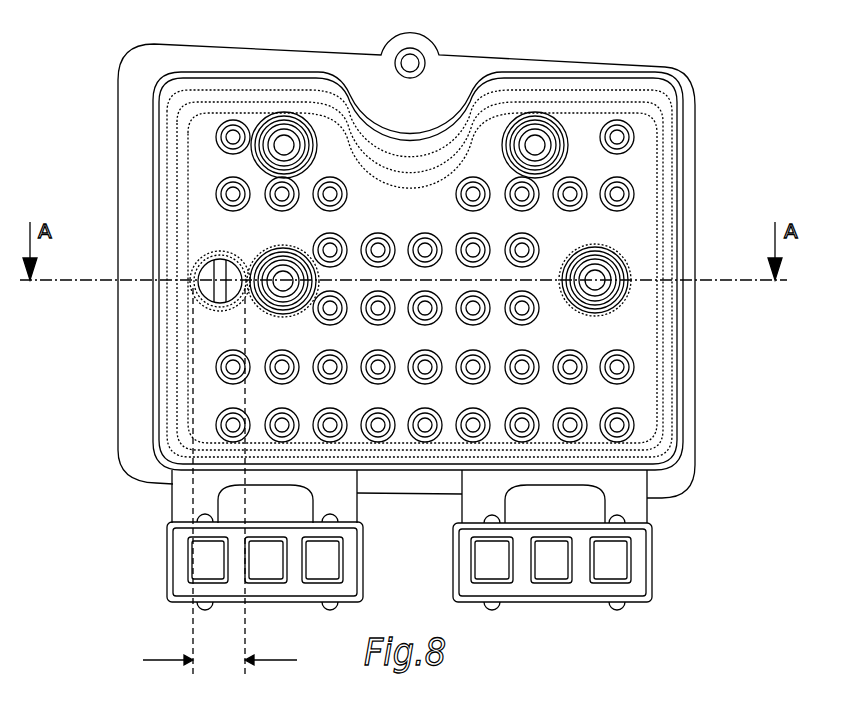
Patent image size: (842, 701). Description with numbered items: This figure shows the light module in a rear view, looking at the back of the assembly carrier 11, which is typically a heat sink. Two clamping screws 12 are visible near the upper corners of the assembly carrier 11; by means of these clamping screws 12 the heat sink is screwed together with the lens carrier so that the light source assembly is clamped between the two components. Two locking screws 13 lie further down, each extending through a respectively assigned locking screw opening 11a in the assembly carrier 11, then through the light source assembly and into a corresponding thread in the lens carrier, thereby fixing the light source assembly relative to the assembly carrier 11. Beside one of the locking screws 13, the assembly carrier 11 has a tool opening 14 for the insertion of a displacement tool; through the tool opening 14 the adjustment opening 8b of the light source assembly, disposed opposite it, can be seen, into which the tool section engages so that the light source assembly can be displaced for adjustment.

The adjustment opening 8b is at (258, 288).
The assembly carrier 11 is at (641, 192).
The locking screw opening 11a is at (270, 300).
The clamping screw 12 is at (284, 140).
The locking screw 13 is at (275, 278).
The tool opening 14 is at (220, 252).